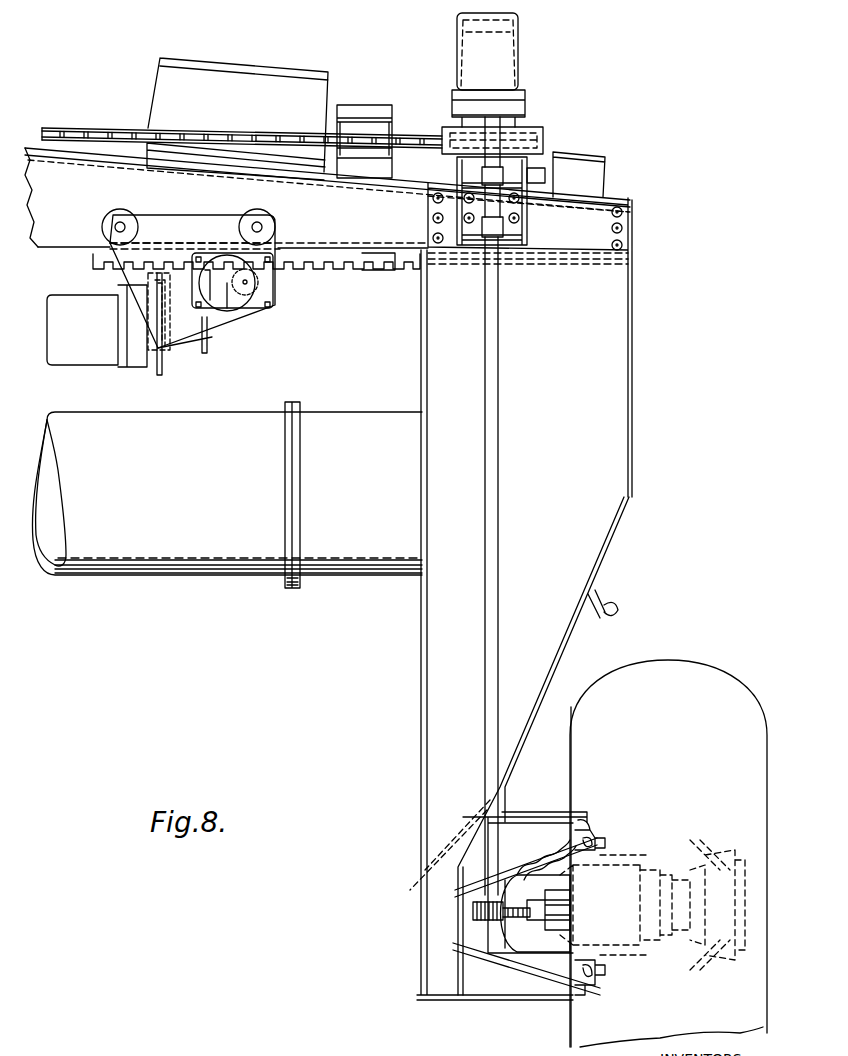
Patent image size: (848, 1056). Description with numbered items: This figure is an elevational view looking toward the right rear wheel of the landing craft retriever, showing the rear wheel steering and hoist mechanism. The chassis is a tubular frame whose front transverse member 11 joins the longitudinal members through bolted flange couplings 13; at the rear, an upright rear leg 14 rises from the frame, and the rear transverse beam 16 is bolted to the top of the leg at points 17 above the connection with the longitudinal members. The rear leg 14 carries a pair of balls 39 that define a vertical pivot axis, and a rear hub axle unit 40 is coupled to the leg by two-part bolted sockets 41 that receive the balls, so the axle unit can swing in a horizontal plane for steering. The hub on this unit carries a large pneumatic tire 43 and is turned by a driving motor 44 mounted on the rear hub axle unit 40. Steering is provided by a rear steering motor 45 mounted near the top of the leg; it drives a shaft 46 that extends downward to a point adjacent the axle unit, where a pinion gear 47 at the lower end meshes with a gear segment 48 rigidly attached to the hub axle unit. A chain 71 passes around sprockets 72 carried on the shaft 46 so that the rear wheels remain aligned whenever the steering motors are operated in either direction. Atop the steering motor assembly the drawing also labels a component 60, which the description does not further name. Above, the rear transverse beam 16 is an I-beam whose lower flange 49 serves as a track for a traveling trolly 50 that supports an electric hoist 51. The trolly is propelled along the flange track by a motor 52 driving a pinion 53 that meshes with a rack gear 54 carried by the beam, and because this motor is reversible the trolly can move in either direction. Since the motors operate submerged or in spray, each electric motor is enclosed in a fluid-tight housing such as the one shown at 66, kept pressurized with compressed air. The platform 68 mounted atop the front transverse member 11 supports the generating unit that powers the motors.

The front transverse member 11 is at (247, 558).
The bolted flange coupling 13 is at (287, 583).
The rear leg 14 is at (433, 605).
The rear transverse beam 16 is at (387, 230).
The bolting points 17 is at (622, 217).
The ball 39 is at (583, 842).
The rear hub axle unit 40 is at (649, 866).
The socket 41 is at (605, 851).
The pneumatic tire 43 is at (610, 680).
The driving motor 44 is at (543, 946).
The rear steering motor 45 is at (507, 76).
The shaft 46 is at (490, 308).
The pinion gear 47 is at (470, 909).
The gear segment 48 is at (507, 890).
The lower flange 49 is at (320, 247).
The traveling trolly 50 is at (226, 200).
The electric hoist 51 is at (211, 347).
The motor 52 is at (228, 308).
The pinion 53 is at (262, 285).
The rack gear 54 is at (378, 272).
The motor 60 is at (500, 48).
The fluid-tight housing 66 is at (513, 938).
The platform 68 is at (530, 840).
The chain 71 is at (433, 135).
The sprocket 72 is at (537, 143).